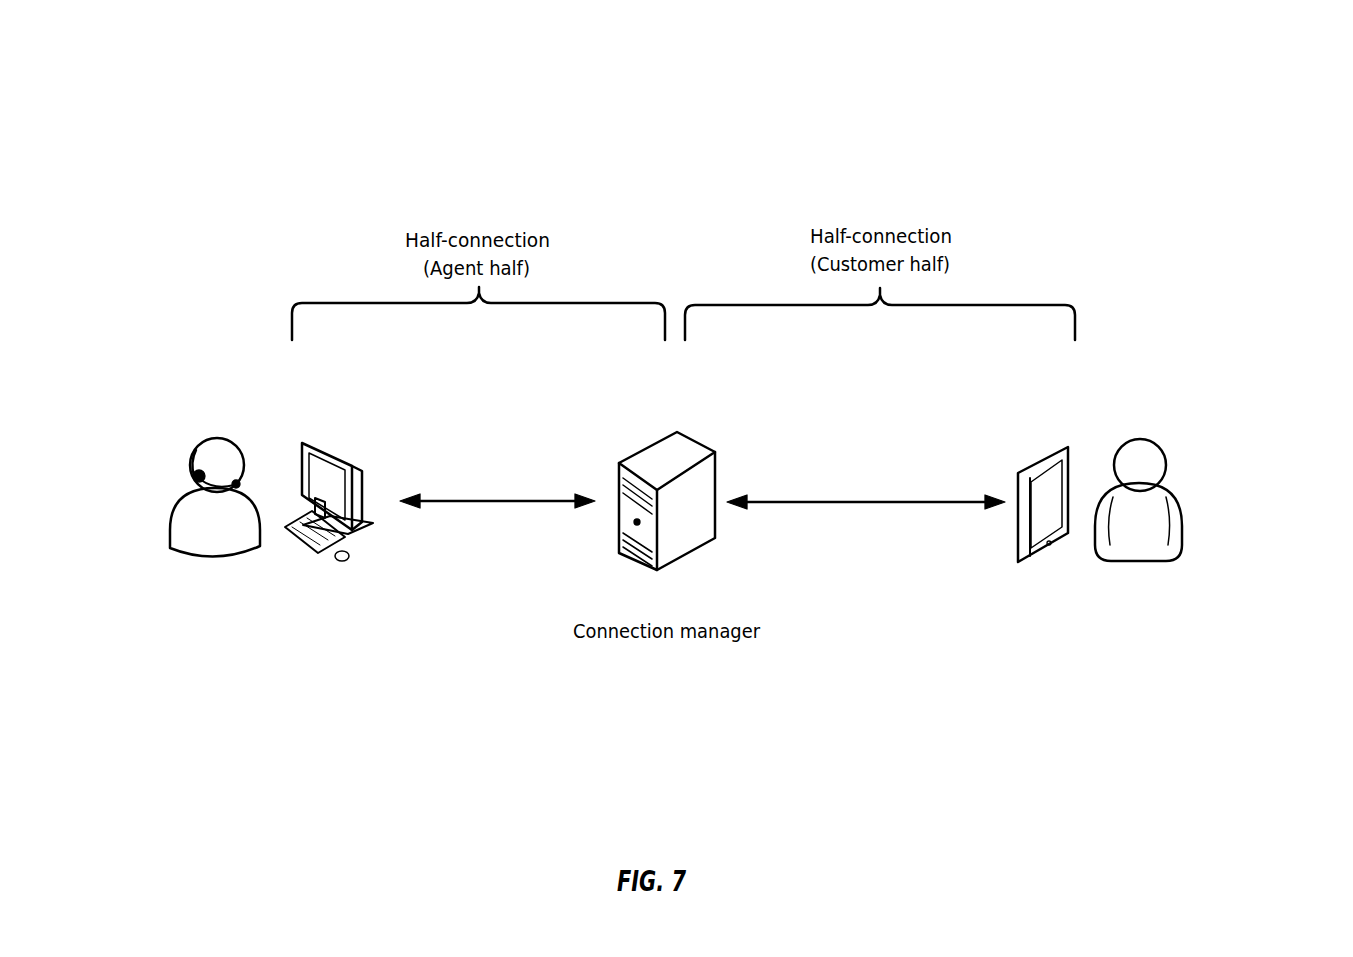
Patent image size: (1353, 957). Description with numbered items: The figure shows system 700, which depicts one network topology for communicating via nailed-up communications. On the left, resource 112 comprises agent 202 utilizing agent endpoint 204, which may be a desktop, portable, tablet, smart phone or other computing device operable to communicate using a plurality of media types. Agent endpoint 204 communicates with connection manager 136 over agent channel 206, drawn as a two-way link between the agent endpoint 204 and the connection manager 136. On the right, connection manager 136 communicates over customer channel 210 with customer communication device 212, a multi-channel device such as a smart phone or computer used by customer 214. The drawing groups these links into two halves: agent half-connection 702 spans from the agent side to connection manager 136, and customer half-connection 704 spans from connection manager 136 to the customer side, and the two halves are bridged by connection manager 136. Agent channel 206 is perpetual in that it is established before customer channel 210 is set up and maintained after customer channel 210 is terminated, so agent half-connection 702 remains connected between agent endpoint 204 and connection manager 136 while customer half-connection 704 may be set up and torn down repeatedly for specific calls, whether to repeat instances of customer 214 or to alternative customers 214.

The system 700 is at (1278, 137).
The agent half-connection 702 is at (544, 202).
The customer half-connection 704 is at (945, 188).
The resource 112 is at (196, 390).
The agent 202 is at (229, 441).
The agent endpoint 204 is at (330, 452).
The agent channel 206 is at (490, 500).
The connection manager 136 is at (714, 468).
The customer channel 210 is at (907, 500).
The customer communication device 212 is at (1063, 442).
The customer 214 is at (1168, 458).